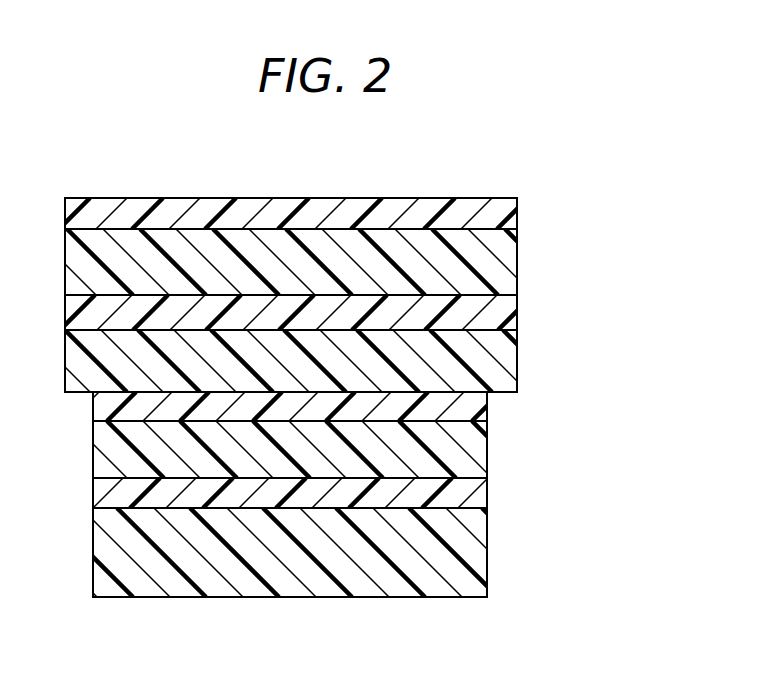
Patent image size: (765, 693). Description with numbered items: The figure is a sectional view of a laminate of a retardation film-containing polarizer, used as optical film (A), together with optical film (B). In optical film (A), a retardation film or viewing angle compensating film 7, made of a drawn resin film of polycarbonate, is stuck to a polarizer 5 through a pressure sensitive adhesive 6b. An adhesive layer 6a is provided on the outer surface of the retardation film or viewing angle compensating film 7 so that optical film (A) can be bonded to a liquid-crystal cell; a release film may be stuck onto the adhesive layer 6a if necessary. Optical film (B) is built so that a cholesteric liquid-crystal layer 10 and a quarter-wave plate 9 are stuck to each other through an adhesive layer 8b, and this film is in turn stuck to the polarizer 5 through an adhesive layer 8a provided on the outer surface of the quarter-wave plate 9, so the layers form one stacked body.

The adhesive layer 6a is at (517, 213).
The retardation film or viewing angle compensating film 7 is at (517, 259).
The pressure sensitive adhesive 6b is at (508, 308).
The polarizer 5 is at (507, 353).
The adhesive layer 8a is at (478, 408).
The λ/4 plate 9 is at (487, 446).
The adhesive layer 8b is at (487, 490).
The cholesteric liquid-crystal layer 10 is at (468, 550).